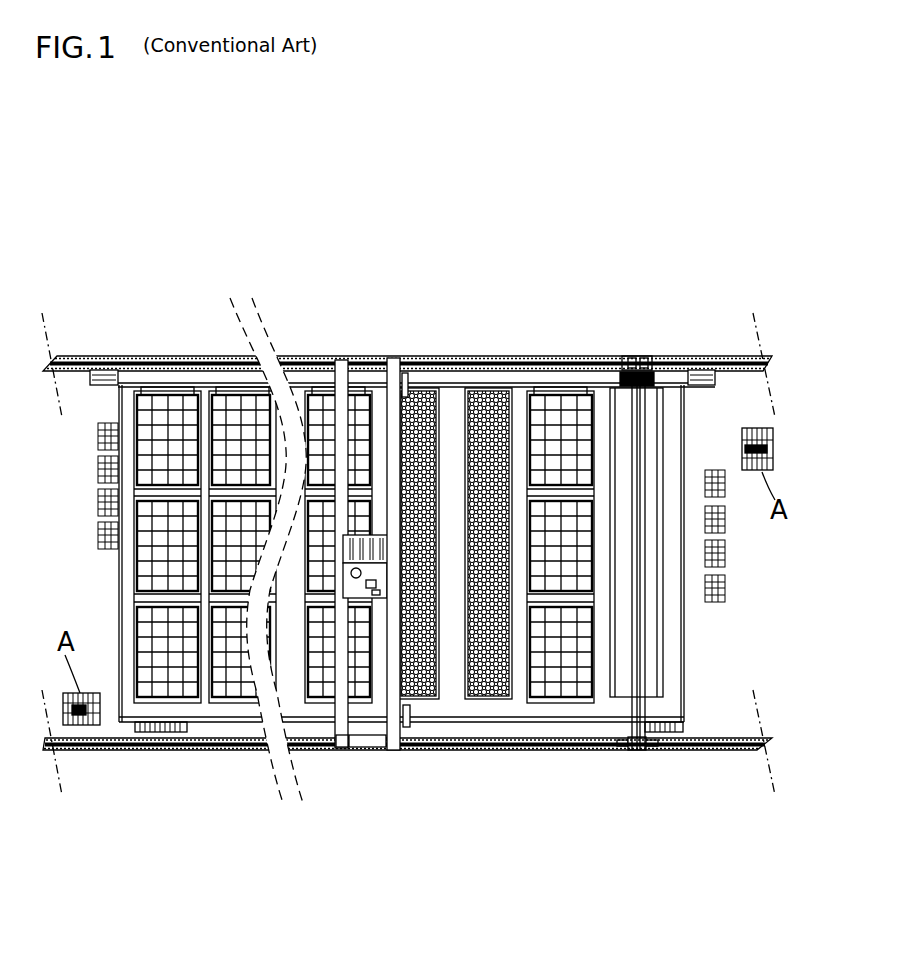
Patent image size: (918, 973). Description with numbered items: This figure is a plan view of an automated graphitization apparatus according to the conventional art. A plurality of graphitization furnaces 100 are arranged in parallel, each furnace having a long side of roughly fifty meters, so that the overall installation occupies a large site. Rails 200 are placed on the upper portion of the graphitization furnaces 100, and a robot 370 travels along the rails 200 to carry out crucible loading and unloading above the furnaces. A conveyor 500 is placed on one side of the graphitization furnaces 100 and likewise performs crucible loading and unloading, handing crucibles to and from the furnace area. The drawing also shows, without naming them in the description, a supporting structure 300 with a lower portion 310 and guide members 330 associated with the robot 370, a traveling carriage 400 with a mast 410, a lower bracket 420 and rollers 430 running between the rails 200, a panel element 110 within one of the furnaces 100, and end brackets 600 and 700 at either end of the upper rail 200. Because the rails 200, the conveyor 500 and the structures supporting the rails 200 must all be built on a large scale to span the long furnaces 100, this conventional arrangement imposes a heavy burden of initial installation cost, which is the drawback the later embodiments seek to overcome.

The graphitization furnace 100 is at (364, 532).
The solar panel 110 is at (563, 668).
The rails 200 is at (442, 357).
The support frame 300 is at (658, 547).
The lower support 310 is at (628, 753).
The guide rod 330 is at (642, 656).
The robot 370 is at (624, 340).
The transfer carriage 400 is at (336, 361).
The mast 410 is at (372, 355).
The lower bracket 420 is at (410, 722).
The roller 430 is at (392, 710).
The conveyor 500 is at (160, 375).
The right bracket 600 is at (706, 370).
The left bracket 700 is at (101, 373).